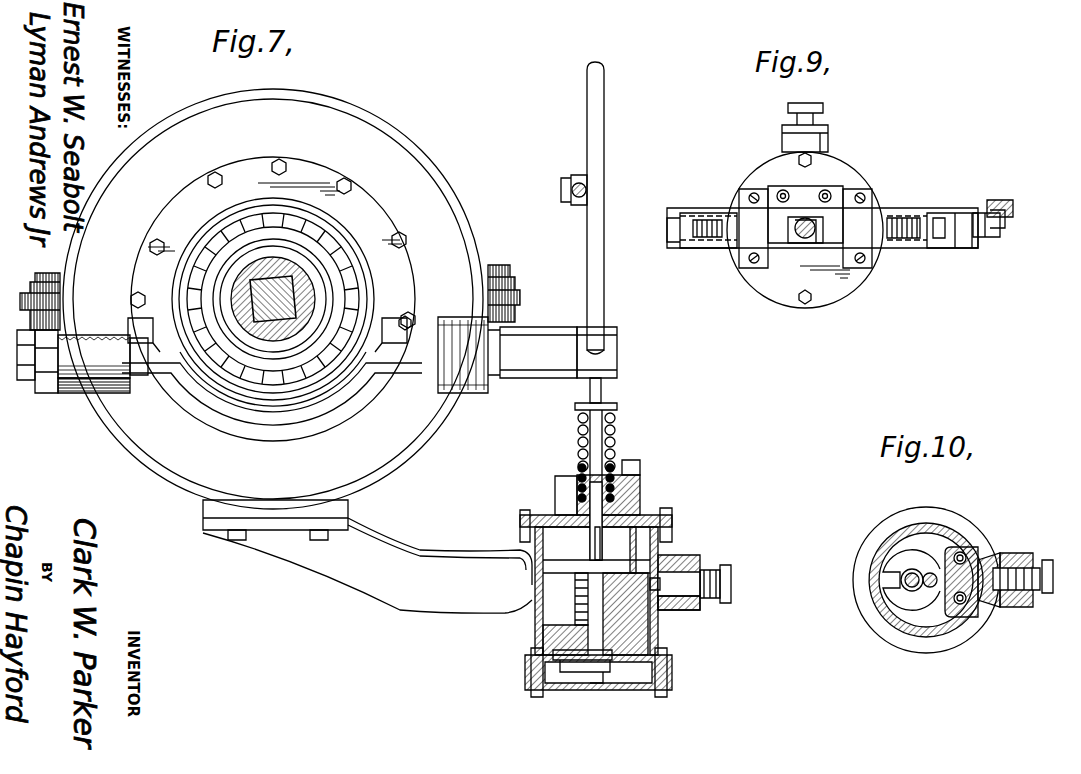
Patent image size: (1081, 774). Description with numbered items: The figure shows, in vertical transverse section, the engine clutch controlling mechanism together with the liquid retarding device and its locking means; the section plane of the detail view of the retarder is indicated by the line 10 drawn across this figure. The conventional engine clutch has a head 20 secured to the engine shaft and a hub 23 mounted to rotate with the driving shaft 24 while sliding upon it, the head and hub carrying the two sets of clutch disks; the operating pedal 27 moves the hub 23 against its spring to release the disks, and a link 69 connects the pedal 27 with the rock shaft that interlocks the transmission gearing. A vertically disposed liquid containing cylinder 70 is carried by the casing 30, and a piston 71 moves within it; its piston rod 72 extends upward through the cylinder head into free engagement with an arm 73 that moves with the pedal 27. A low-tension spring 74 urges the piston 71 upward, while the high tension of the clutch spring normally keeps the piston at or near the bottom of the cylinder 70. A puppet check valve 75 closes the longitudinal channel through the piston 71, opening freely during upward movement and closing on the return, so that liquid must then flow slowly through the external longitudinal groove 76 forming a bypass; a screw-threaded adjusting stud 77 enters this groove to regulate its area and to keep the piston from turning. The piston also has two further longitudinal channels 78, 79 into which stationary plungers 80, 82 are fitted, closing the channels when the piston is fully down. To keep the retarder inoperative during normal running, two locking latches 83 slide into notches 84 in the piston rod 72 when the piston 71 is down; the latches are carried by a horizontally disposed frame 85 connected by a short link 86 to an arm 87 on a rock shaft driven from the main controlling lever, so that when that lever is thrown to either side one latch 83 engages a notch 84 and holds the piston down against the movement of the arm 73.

In FIG. 7, the bracket 10 is at (530, 583).
In FIG. 7, the head 20 is at (322, 172).
In FIG. 7, the hub 23 is at (282, 262).
In FIG. 7, the driving shaft 24 is at (250, 322).
In FIG. 7, the operating pedal 27 is at (604, 134).
In FIG. 7, the casing 30 is at (432, 170).
In FIG. 7, the link 69 is at (563, 190).
In FIG. 7, the liquid containing cylinder 70 is at (662, 632).
In FIG. 9, the liquid containing cylinder 70 is at (805, 230).
In FIG. 10, the liquid containing cylinder 70 is at (880, 582).
In FIG. 7, the piston 71 is at (542, 614).
In FIG. 10, the piston 71 is at (880, 538).
In FIG. 7, the piston rod 72 is at (605, 443).
In FIG. 9, the piston rod 72 is at (805, 238).
In FIG. 10, the piston rod 72 is at (925, 588).
In FIG. 7, the arm 73 is at (592, 372).
In FIG. 7, the spring 74 is at (580, 436).
In FIG. 7, the puppet check valve 75 is at (572, 660).
In FIG. 7, the external longitudinal groove 76 is at (702, 610).
In FIG. 7, the screw-threaded adjusting stud 77 is at (690, 560).
In FIG. 9, the screw-threaded adjusting stud 77 is at (823, 108).
In FIG. 10, the screw-threaded adjusting stud 77 is at (1035, 565).
In FIG. 10, the longitudinal channel 78 is at (963, 600).
In FIG. 10, the longitudinal channel 79 is at (966, 553).
In FIG. 10, the stationary plunger 80 is at (960, 610).
In FIG. 7, the stationary plunger 82 is at (665, 516).
In FIG. 10, the stationary plunger 82 is at (968, 540).
In FIG. 9, the locking latches 83 is at (740, 238).
In FIG. 7, the notches 84 is at (642, 487).
In FIG. 9, the notches 84 is at (820, 217).
In FIG. 7, the frame 85 is at (583, 478).
In FIG. 9, the frame 85 is at (702, 248).
In FIG. 9, the link 86 is at (985, 237).
In FIG. 9, the arm 87 is at (1010, 200).